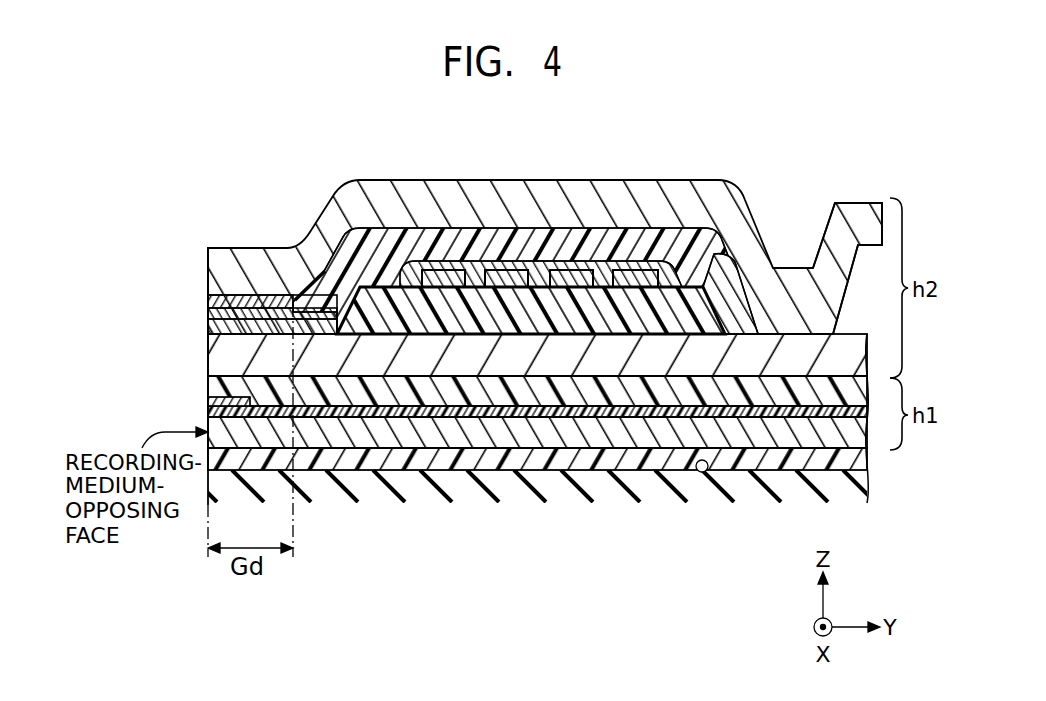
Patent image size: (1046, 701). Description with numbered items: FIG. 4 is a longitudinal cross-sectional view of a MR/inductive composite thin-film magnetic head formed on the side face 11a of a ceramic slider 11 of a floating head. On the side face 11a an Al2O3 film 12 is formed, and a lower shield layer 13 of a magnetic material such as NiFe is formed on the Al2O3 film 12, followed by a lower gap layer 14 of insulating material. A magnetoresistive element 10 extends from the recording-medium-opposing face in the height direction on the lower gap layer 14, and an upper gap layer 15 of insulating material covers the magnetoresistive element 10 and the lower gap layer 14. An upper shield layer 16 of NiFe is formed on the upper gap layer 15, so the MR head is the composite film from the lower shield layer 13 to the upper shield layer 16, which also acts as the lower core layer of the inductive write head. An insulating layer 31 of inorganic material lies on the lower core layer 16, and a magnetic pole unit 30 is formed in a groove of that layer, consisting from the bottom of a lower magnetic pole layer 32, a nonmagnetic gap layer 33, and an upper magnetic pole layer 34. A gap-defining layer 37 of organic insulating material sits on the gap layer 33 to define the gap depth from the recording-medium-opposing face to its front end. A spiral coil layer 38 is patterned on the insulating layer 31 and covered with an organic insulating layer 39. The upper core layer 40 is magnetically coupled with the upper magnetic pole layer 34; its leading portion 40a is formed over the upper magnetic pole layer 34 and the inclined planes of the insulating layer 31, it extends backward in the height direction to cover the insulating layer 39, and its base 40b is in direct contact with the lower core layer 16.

The magnetoresistive element 10 is at (208, 401).
The slider 11 is at (768, 488).
The side face 11a is at (702, 473).
The Al2O3 film 12 is at (623, 457).
The lower shield layer 13 is at (588, 432).
The lower gap layer 14 is at (537, 412).
The upper gap layer 15 is at (487, 390).
The upper shield layer 16 is at (428, 353).
The magnetic pole unit 30 is at (213, 311).
The insulating layer 31 is at (377, 317).
The lower magnetic pole layer 32 is at (236, 336).
The nonmagnetic gap layer 33 is at (208, 314).
The upper magnetic pole layer 34 is at (208, 302).
The gap-defining layer 37 is at (323, 275).
The coil layer 38 is at (547, 265).
The organic insulating layer 39 is at (707, 257).
The upper core layer 40 is at (432, 210).
The leading portion 40a is at (250, 275).
The base 40b is at (795, 305).